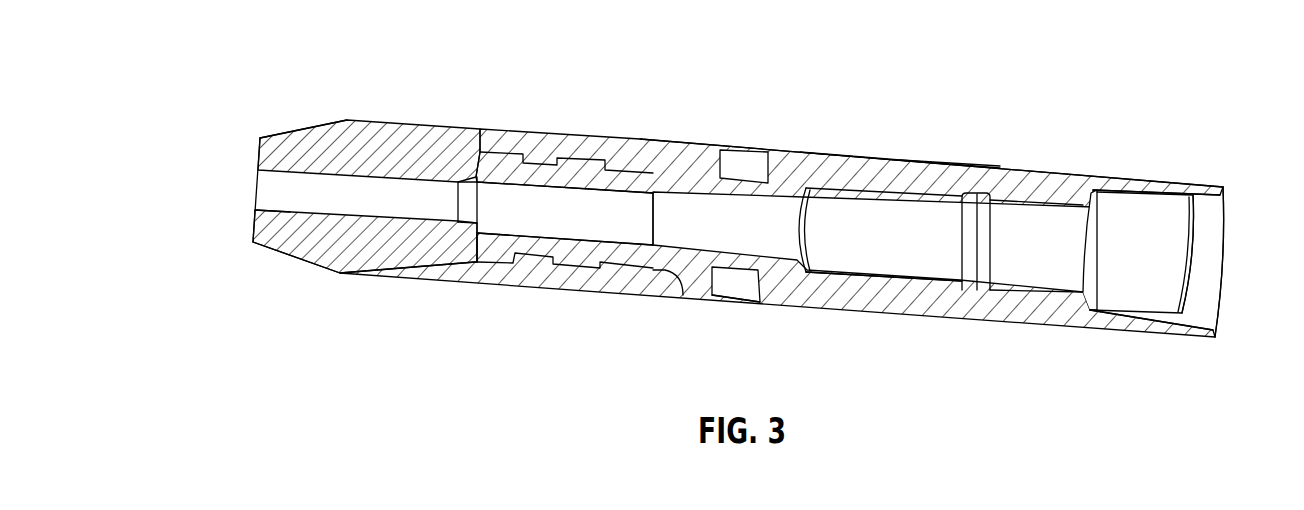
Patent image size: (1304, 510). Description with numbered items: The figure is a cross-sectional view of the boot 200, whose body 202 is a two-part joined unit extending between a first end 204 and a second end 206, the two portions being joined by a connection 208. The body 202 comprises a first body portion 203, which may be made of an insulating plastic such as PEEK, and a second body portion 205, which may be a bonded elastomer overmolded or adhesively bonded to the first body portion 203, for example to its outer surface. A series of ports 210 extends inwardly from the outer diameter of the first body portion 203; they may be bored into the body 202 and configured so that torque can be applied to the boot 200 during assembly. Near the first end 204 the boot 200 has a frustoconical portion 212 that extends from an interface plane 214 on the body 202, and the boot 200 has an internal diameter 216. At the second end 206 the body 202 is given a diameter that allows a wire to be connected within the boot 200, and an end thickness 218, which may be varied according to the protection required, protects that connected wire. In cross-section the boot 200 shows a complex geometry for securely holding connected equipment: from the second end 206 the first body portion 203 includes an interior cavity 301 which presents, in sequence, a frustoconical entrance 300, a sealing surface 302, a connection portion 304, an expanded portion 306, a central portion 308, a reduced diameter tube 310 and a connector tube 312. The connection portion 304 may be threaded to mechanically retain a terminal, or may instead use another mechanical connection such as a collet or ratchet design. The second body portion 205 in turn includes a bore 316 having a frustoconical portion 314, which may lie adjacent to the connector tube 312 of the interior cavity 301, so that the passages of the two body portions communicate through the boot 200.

The boot 200 is at (881, 107).
The body 202 is at (966, 160).
The first body portion 203 is at (921, 160).
The first end 204 is at (259, 138).
The second body portion 205 is at (537, 291).
The second end 206 is at (1215, 337).
The connection 208 is at (689, 162).
The ports 210 is at (731, 288).
The frustoconical portion 212 is at (313, 266).
The interface plane 214 is at (348, 119).
The internal diameter 216 is at (1219, 187).
The end thickness 218 is at (1187, 320).
The frustoconical entrance 300 is at (1193, 205).
The interior cavity 301 is at (860, 224).
The sealing surface 302 is at (1123, 205).
The connection portion 304 is at (1017, 272).
The expanded portion 306 is at (992, 205).
The central portion 308 is at (893, 260).
The reduced diameter tube 310 is at (673, 227).
The connector tube 312 is at (500, 192).
The frustoconical portion 314 is at (463, 212).
The bore 316 is at (287, 214).